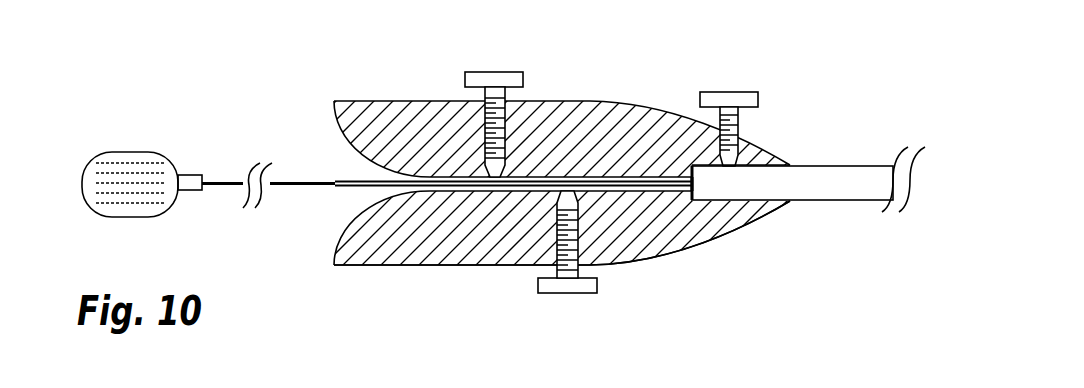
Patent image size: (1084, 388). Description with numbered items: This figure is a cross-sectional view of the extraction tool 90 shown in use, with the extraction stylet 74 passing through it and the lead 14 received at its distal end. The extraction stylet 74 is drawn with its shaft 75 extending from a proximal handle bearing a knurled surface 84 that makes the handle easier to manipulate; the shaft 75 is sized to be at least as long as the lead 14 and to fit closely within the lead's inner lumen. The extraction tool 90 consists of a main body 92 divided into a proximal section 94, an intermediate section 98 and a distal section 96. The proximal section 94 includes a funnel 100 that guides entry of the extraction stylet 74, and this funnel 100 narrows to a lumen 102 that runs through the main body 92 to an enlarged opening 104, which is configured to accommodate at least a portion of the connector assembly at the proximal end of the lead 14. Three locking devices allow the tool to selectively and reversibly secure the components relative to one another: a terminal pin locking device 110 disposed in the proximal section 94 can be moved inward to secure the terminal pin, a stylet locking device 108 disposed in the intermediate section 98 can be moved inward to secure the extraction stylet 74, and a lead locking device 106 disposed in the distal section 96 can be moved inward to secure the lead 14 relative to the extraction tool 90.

The lead 14 is at (857, 189).
The extraction stylet 74 is at (238, 102).
The shaft 75 is at (315, 185).
The knurled surface 84 is at (130, 168).
The extraction tool 90 is at (682, 290).
The main body 92 is at (400, 118).
The proximal section 94 is at (408, 243).
The distal section 96 is at (767, 145).
The intermediate section 98 is at (513, 217).
The funnel 100 is at (341, 131).
The lumen 102 is at (621, 178).
The enlarged opening 104 is at (748, 194).
The lead locking device 106 is at (729, 90).
The stylet locking device 108 is at (502, 71).
The terminal pin locking device 110 is at (558, 295).